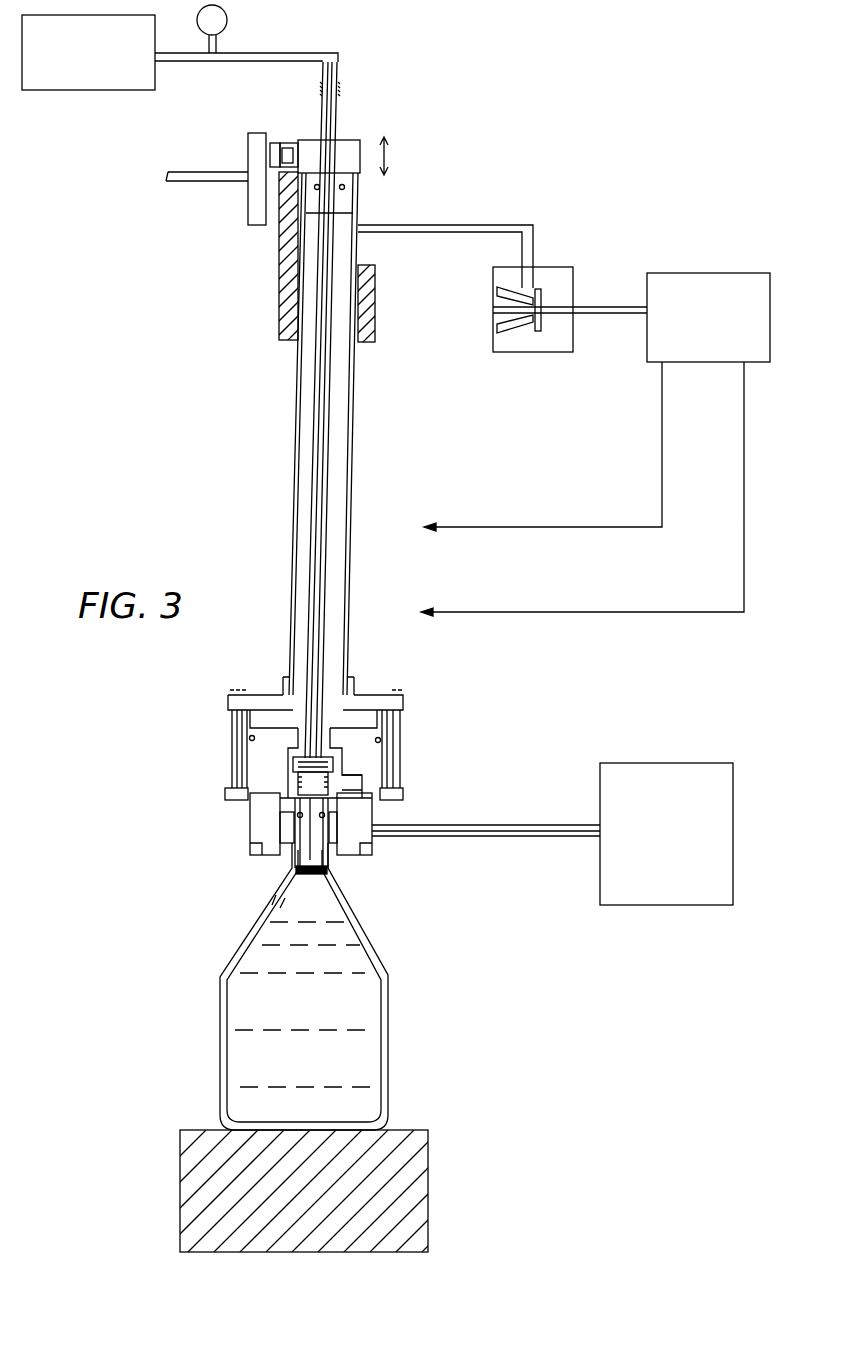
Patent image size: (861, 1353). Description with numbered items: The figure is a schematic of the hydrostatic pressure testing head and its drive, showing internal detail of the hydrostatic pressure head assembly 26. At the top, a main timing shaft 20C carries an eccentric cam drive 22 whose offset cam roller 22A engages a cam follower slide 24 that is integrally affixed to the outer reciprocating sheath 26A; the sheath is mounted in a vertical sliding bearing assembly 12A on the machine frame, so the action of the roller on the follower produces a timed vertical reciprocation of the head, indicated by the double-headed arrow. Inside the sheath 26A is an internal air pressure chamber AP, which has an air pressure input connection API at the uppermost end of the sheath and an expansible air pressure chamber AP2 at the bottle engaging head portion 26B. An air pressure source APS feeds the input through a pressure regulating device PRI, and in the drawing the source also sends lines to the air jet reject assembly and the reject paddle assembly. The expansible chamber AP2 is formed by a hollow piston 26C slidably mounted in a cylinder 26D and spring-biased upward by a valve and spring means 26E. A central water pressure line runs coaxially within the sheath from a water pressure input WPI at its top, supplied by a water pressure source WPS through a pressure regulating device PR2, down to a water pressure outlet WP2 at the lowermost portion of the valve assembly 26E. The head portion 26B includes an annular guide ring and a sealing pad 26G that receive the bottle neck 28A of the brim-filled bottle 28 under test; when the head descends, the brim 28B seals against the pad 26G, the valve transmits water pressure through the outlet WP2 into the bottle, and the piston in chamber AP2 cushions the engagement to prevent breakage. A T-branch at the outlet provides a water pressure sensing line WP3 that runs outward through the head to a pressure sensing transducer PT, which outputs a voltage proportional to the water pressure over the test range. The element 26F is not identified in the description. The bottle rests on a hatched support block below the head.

The water pressure source WPS is at (116, 90).
The pressure regulating device PR2 is at (232, 46).
The water pressure input WPI is at (316, 52).
The hydrostatic pressure head assembly 26 is at (254, 501).
The outer reciprocating sheath 26A is at (297, 413).
The internal air pressure chamber AP is at (344, 461).
The cam roller 22A is at (276, 143).
The cam follower slide 24 is at (287, 145).
The eccentric cam drive 22 is at (248, 205).
The main timing shaft 20C is at (196, 171).
The sliding bearing assembly 12A is at (353, 261).
The air pressure input connection API is at (401, 228).
The pressure regulating device PRI is at (550, 270).
The air pressure source APS is at (771, 298).
The expansible air pressure chamber AP2 is at (362, 718).
The hollow piston 26C is at (382, 742).
The cylinder 26D is at (345, 767).
The valve and spring means 26E is at (386, 783).
The bottle engaging head portion 26B is at (250, 815).
The sealing pad 26G is at (288, 830).
The nozzle 26F is at (290, 868).
The water pressure sensing line WP3 is at (413, 838).
The pressure sensing transducer PT is at (670, 763).
The water pressure outlet WP2 is at (300, 843).
The brim 28B is at (318, 868).
The bottle neck 28A is at (336, 862).
The bottle 28 is at (388, 1025).